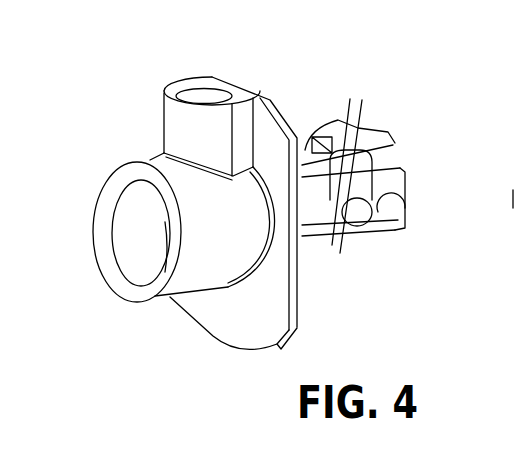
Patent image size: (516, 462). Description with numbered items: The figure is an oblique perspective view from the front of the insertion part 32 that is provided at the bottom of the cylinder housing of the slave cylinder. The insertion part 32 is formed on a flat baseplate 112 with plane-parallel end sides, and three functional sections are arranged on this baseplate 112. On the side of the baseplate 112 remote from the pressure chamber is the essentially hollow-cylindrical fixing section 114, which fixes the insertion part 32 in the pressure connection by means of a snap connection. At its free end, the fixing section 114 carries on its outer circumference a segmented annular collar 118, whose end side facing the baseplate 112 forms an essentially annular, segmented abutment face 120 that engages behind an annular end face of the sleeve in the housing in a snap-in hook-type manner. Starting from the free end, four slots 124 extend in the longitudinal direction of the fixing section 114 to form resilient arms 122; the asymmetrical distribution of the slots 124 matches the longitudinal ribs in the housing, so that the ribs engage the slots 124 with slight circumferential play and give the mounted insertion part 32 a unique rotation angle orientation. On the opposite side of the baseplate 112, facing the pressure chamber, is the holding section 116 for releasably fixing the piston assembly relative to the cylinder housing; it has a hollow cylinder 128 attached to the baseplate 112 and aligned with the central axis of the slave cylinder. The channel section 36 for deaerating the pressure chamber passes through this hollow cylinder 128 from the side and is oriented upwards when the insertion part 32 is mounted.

The insertion part 32 is at (317, 74).
The channel section 36 is at (205, 95).
The baseplate 112 is at (213, 310).
The fixing section 114 is at (388, 115).
The holding section 116 is at (92, 178).
The segmented annular collar 118 is at (395, 214).
The abutment face 120 is at (332, 233).
The resilient arms 122 is at (361, 158).
The slots 124 is at (400, 167).
The hollow cylinder 128 is at (250, 241).